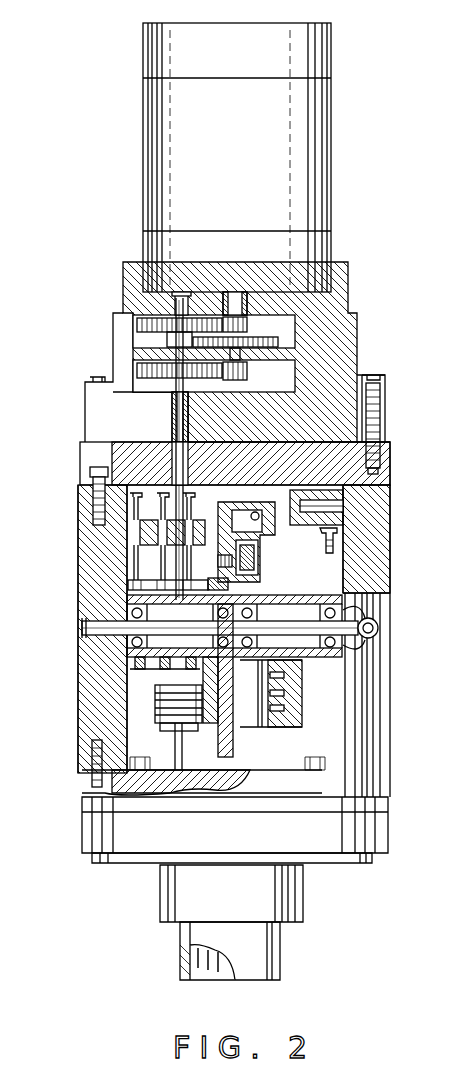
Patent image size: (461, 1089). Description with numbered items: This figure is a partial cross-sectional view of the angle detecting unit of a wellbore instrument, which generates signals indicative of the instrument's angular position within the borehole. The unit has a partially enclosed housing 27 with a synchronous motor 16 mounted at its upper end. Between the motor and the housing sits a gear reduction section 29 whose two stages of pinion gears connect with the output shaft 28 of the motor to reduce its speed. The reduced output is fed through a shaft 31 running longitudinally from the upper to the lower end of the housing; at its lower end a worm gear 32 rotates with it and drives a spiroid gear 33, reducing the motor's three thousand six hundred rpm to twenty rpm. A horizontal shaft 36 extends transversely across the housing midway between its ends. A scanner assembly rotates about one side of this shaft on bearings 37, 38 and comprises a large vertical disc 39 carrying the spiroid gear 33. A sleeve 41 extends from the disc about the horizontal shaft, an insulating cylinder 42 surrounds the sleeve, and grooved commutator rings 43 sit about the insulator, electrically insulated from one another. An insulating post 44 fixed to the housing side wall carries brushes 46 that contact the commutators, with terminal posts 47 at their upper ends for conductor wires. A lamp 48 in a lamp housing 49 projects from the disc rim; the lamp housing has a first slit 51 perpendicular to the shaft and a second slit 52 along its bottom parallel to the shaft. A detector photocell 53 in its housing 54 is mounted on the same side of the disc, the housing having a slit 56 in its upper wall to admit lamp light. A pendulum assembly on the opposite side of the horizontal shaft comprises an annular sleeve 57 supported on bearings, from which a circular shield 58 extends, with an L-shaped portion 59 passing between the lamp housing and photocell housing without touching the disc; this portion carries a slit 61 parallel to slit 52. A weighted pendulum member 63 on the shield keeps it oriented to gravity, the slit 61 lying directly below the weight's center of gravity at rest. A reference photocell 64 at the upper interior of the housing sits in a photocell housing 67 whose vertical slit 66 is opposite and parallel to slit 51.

The synchronous motor 16 is at (332, 200).
The housing 27 is at (80, 840).
The output shaft 28 is at (250, 298).
The gear reduction section 29 is at (358, 318).
The shaft 31 is at (172, 405).
The worm gear 32 is at (170, 725).
The spiroid gear 33 is at (210, 723).
The horizontal shaft 36 is at (130, 610).
The bearing 37 is at (125, 606).
The bearing 38 is at (170, 693).
The vertical disc 39 is at (234, 744).
The sleeve 41 is at (135, 660).
The insulating cylinder 42 is at (95, 715).
The grooved commutator rings 43 is at (128, 585).
The insulating post 44 is at (140, 530).
The brushes 46 is at (82, 570).
The terminal posts 47 is at (135, 500).
The lamp 48 is at (390, 476).
The lamp housing 49 is at (90, 490).
The first slit 51 is at (378, 400).
The second slit 52 is at (272, 540).
The detector photocell 53 is at (335, 575).
The photocell housing 54 is at (300, 665).
The slit 56 is at (270, 560).
The annular sleeve 57 is at (380, 622).
The circular shield 58 is at (378, 600).
The L-shaped portion 59 is at (265, 485).
The slit 61 is at (280, 727).
The weighted pendulum member 63 is at (300, 700).
The reference photocell 64 is at (340, 540).
The vertical slit 66 is at (390, 453).
The photocell housing 67 is at (372, 446).